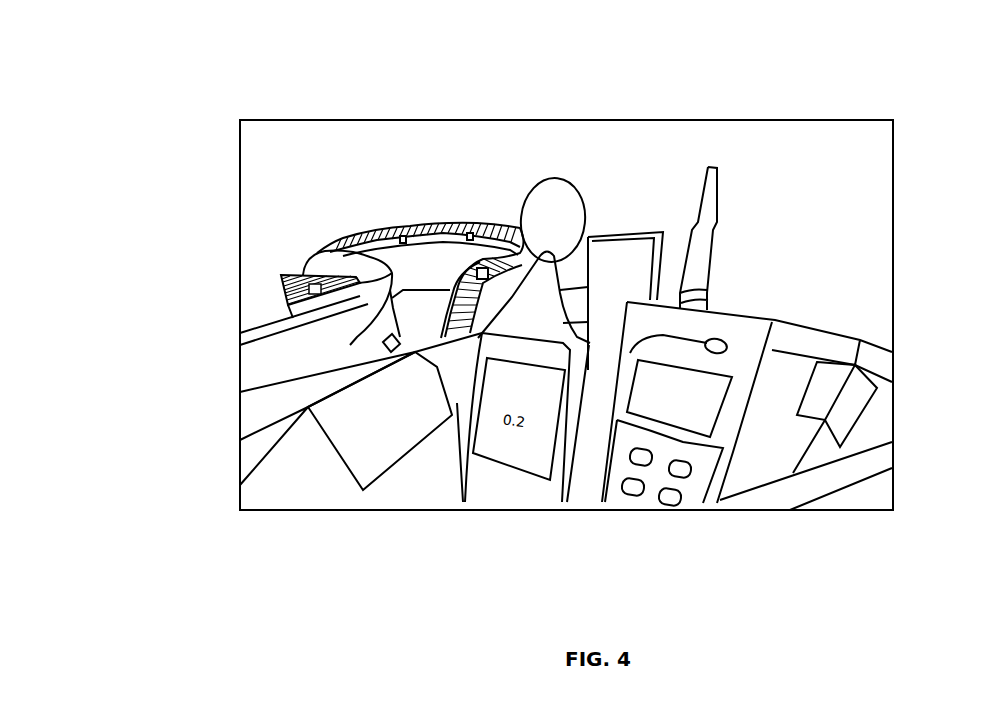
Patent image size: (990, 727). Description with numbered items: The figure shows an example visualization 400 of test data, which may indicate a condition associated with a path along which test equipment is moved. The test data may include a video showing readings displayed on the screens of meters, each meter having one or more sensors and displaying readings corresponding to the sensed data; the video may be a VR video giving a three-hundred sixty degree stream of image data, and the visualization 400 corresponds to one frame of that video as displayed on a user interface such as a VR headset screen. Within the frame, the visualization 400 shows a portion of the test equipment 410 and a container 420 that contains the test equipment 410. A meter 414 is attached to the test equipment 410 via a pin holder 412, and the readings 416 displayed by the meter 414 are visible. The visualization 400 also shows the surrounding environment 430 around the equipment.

The visualization 400 is at (201, 115).
The test equipment 410 is at (749, 223).
The pin holder 412 is at (705, 254).
The meter 414 is at (730, 341).
The readings 416 is at (699, 410).
The container 420 is at (302, 440).
The surrounding environment 430 is at (273, 310).